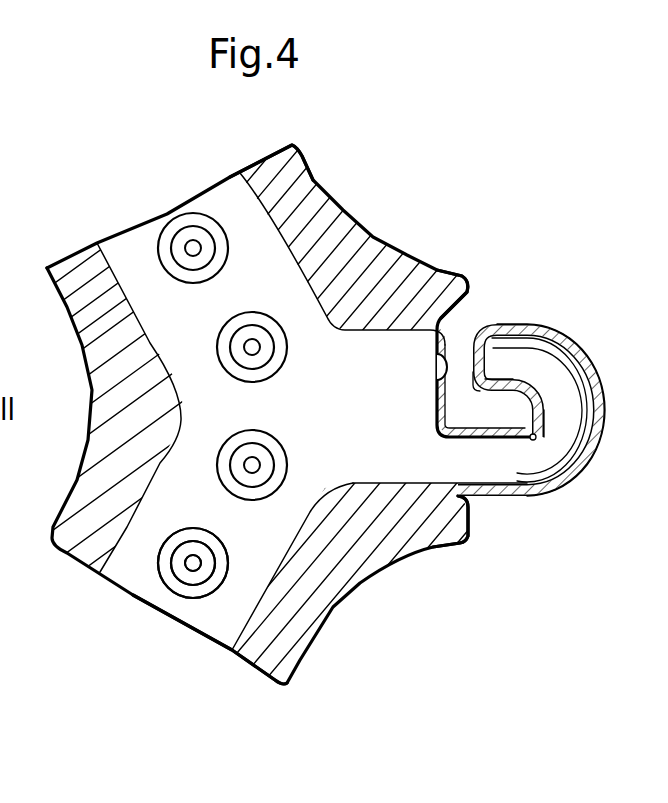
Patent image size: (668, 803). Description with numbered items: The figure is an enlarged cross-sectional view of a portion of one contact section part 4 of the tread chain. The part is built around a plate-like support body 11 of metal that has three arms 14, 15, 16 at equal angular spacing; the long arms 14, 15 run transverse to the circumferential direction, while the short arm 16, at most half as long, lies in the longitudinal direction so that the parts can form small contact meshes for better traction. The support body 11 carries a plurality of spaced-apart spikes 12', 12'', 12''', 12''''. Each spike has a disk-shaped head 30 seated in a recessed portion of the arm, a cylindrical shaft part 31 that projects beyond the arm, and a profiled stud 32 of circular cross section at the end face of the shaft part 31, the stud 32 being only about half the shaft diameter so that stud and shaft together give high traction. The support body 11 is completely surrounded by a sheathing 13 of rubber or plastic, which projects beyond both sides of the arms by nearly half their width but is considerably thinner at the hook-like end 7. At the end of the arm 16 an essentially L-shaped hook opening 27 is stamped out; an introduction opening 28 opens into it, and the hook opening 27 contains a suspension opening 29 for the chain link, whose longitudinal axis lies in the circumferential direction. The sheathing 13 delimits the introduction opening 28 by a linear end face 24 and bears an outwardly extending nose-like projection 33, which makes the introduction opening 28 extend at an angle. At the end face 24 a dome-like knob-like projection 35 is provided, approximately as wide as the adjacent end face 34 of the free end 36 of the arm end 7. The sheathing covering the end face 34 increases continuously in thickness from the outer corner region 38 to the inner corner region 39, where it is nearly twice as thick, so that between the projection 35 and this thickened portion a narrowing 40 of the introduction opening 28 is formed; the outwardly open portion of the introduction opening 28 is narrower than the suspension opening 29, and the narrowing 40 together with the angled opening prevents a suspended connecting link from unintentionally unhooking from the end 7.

The contact section part 4 is at (350, 206).
The hook-like end 7 is at (603, 380).
The plate-like support body 11 is at (272, 562).
The spike 12' is at (144, 590).
The spike 12'' is at (156, 471).
The spike 12''' is at (163, 347).
The spike 12'''' is at (181, 205).
The sheathing 13 is at (82, 258).
The arm 14 is at (222, 641).
The arm 15 is at (263, 238).
The arm 16 is at (378, 475).
The linear end face 24 is at (445, 405).
The hook opening 27 is at (478, 420).
The introduction opening 28 is at (458, 325).
The suspension opening 29 is at (537, 437).
The disk-shaped head 30 is at (173, 587).
The shaft part 31 is at (215, 565).
The profiled stud 32 is at (192, 568).
The nose-like projection 33 is at (450, 285).
The end face 34 is at (490, 340).
The knob-like projection 35 is at (444, 366).
The free end 36 is at (490, 352).
The outer corner region 38 is at (495, 342).
The inner corner region 39 is at (472, 388).
The narrowing 40 is at (585, 362).